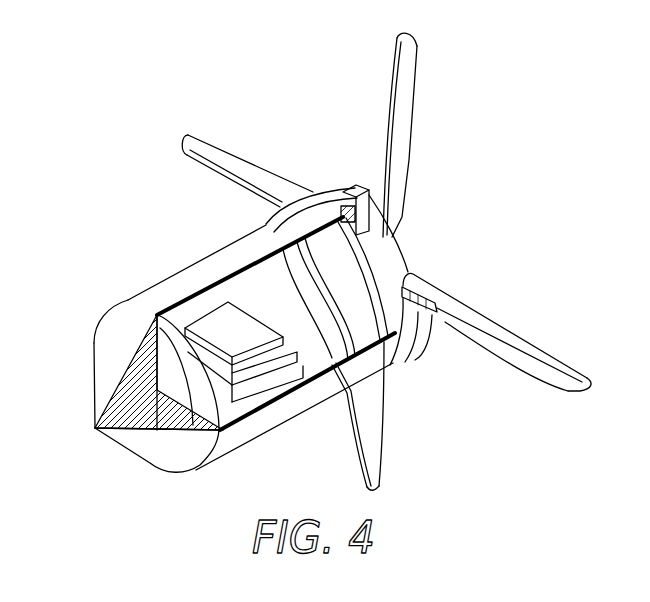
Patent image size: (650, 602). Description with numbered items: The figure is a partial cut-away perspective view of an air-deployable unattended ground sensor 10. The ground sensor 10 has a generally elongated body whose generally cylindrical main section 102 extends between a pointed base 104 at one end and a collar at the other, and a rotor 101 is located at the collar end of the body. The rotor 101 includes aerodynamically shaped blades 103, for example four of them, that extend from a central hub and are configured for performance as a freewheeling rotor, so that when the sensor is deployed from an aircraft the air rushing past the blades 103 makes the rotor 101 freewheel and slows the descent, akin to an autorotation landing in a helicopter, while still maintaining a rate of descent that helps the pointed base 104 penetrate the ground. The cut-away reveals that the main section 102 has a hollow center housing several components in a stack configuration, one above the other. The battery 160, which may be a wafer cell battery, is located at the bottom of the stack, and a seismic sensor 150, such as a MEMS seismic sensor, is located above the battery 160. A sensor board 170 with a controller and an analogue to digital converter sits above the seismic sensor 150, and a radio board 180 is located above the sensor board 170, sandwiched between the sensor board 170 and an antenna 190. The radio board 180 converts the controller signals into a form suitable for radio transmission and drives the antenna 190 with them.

The ground sensor 10 is at (512, 197).
The rotor 101 is at (537, 308).
The cylindrical main section 102 is at (247, 243).
The blades 103 is at (411, 68).
The pointed base 104 is at (99, 346).
The seismic sensor 150 is at (222, 318).
The battery 160 is at (163, 433).
The sensor board 170 is at (333, 352).
The radio board 180 is at (383, 378).
The antenna 190 is at (417, 360).